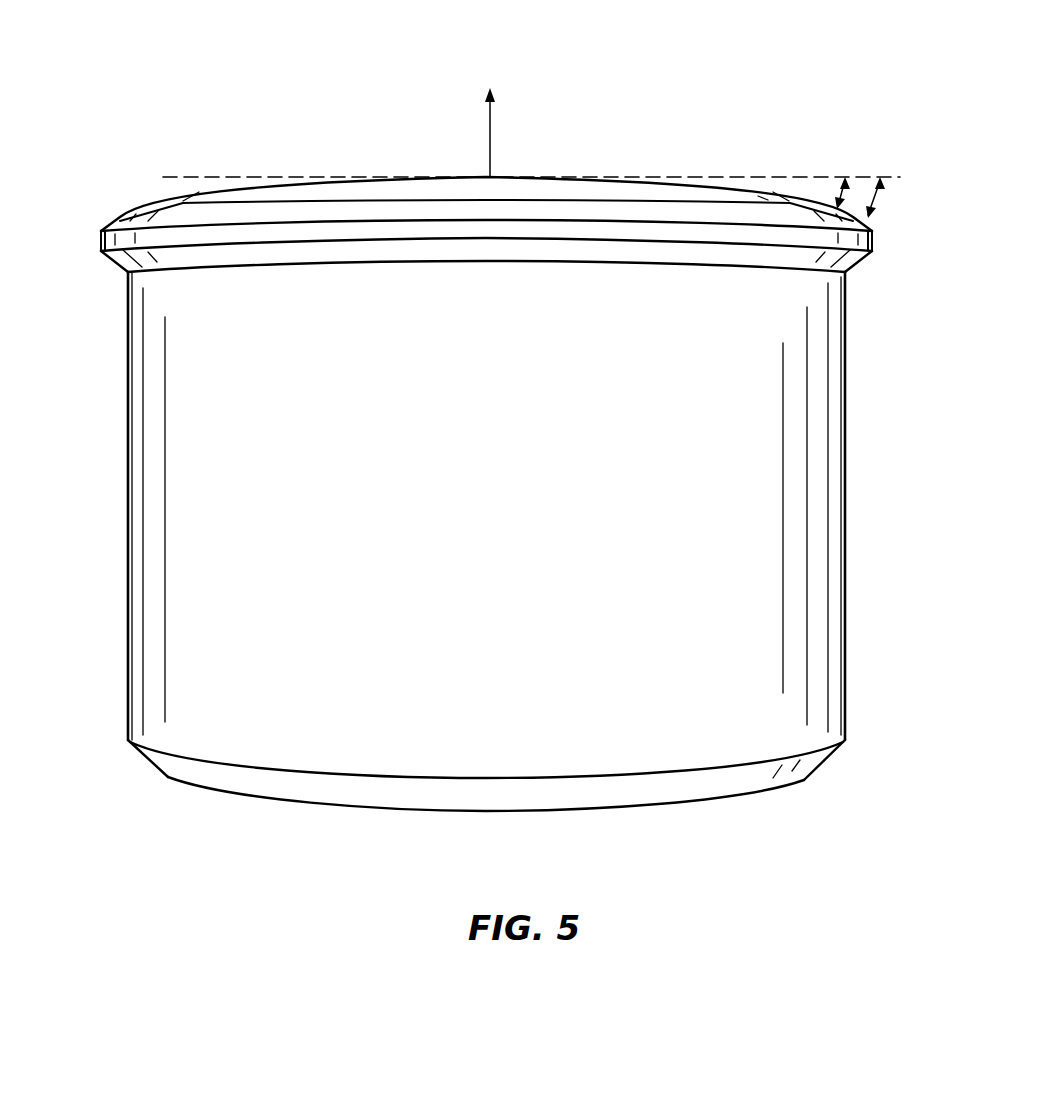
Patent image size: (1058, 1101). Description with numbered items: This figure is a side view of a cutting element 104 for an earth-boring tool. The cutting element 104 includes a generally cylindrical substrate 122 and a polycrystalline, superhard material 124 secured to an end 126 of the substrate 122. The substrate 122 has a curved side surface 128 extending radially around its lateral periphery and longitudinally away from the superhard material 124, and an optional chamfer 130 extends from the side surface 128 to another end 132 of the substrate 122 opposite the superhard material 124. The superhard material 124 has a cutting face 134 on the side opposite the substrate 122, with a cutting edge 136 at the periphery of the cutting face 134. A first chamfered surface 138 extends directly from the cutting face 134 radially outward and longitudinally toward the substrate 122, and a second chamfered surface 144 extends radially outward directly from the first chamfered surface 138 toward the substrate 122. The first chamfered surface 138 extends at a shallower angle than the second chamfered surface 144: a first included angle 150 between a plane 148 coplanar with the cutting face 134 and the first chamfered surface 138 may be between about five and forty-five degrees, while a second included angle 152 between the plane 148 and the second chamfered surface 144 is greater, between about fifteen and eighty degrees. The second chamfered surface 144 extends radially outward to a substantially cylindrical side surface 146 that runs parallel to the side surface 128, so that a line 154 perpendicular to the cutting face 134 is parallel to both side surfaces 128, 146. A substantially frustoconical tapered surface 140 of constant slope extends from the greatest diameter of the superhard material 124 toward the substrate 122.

The cutting element 104 is at (505, 434).
The substrate 122 is at (537, 506).
The polycrystalline, superhard material 124 is at (486, 170).
The end of the substrate 126 is at (362, 265).
The curved side surface 128 is at (754, 537).
The chamfer 130 is at (790, 770).
The another end of the substrate 132 is at (663, 806).
The cutting face 134 is at (469, 177).
The cutting edge 136 is at (183, 191).
The first chamfered surface 138 is at (153, 203).
The tapered surface 140 is at (865, 265).
The second chamfered surface 144 is at (106, 222).
The cylindrical side surface 146 is at (874, 243).
The plane 148 is at (810, 176).
The first included angle 150 is at (843, 193).
The second included angle 152 is at (876, 200).
The line 154 is at (490, 130).